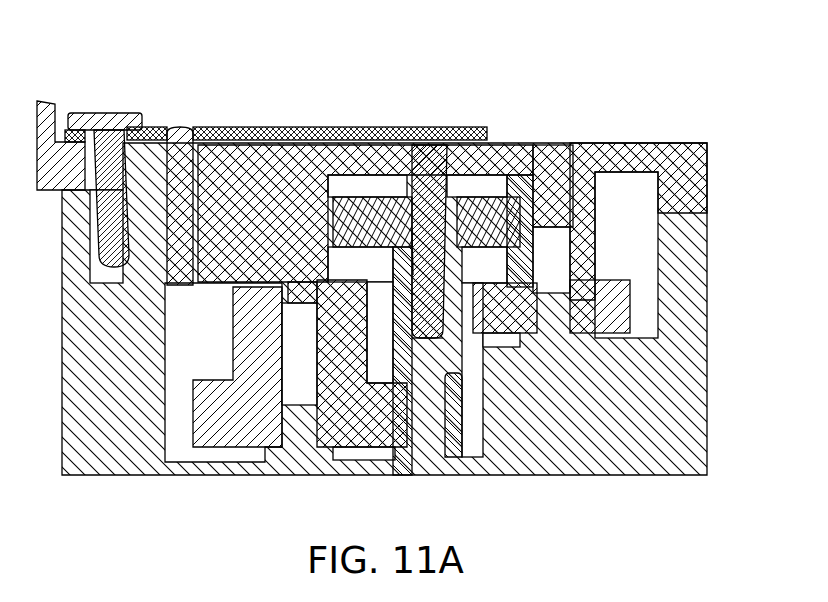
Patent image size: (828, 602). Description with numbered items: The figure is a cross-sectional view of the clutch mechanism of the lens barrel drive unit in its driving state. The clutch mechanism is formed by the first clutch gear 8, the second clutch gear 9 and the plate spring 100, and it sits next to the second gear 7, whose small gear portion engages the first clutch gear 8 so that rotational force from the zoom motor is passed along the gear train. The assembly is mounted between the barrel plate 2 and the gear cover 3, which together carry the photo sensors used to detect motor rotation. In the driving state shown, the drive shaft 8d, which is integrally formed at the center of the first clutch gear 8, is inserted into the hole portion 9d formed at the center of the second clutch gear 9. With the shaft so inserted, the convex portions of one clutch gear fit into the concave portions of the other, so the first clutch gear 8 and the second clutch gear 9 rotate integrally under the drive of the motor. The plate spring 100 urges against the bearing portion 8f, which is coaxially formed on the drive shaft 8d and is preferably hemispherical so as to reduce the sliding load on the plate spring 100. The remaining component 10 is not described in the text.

The barrel plate 2 is at (670, 460).
The gear cover 3 is at (658, 158).
The second gear 7 is at (553, 158).
The first clutch gear 8 is at (468, 217).
The drive shaft 8d is at (427, 252).
The bearing portion 8f is at (427, 143).
The second clutch gear 9 is at (428, 450).
The hole portion 9d is at (433, 343).
The support block 10 is at (218, 442).
The plate spring 100 is at (337, 137).